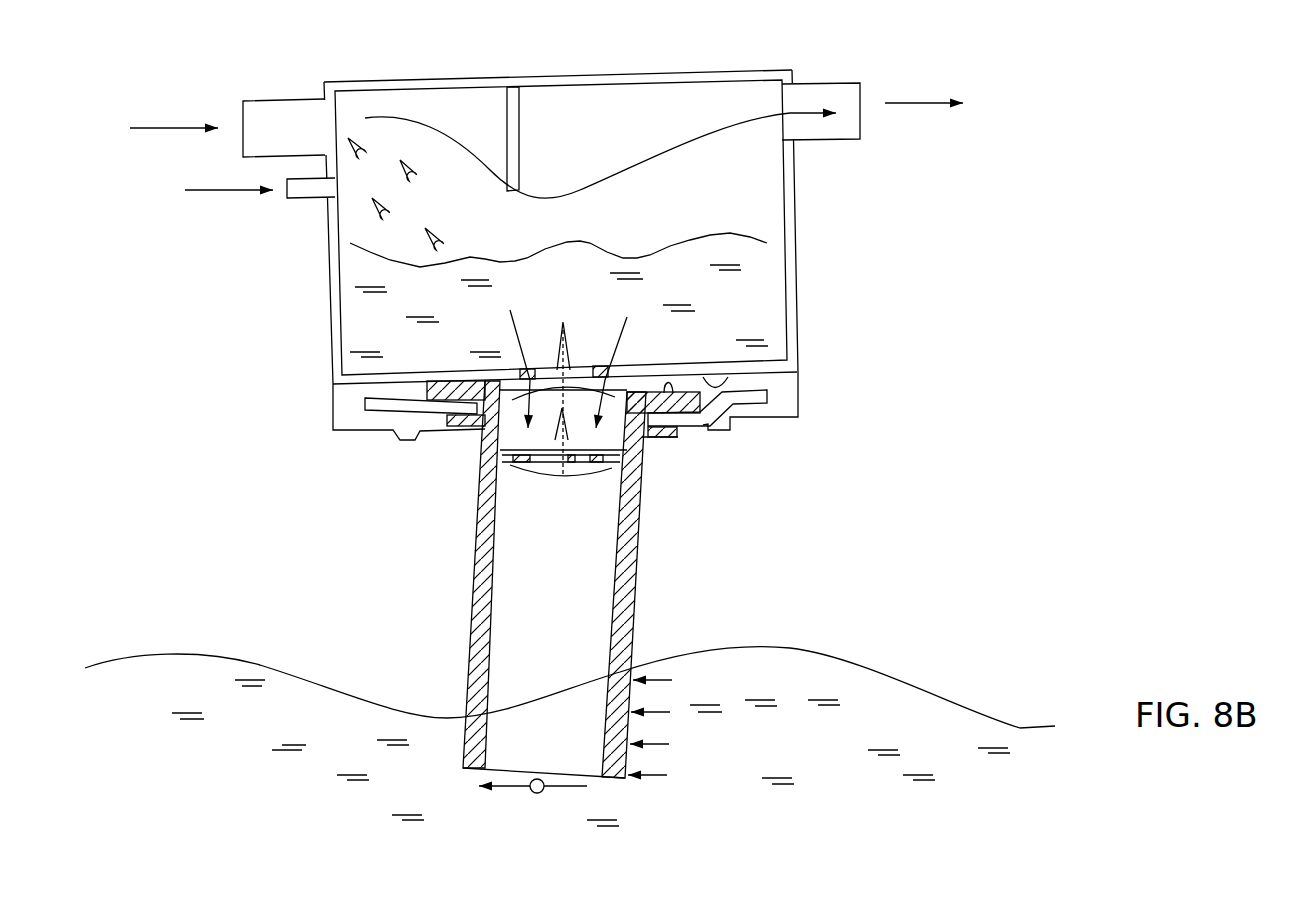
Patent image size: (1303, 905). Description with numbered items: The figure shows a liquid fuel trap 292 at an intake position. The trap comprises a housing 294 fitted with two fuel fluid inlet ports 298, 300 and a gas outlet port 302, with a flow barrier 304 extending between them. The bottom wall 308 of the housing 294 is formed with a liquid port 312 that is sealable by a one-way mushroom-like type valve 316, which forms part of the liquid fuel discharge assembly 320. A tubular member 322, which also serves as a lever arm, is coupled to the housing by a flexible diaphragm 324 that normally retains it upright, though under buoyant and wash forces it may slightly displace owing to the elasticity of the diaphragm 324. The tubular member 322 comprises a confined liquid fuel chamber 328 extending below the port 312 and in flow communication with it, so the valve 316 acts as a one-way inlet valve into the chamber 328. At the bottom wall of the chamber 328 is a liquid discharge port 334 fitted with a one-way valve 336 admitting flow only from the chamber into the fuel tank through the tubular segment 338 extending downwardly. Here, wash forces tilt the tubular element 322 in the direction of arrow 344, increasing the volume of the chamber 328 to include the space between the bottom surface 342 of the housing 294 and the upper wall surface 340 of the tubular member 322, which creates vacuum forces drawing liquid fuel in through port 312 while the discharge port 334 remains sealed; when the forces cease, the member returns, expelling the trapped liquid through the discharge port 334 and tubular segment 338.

The liquid fuel trap 292 is at (315, 493).
The housing 294 is at (792, 183).
The fuel fluid inlet port 298 is at (285, 100).
The fuel fluid inlet port 300 is at (305, 198).
The gas outlet port 302 is at (817, 83).
The flow barrier 304 is at (519, 137).
The bottom wall 308 is at (763, 368).
The liquid port 312 is at (620, 447).
The one-way mushroom-like type valve 316 is at (520, 412).
The liquid fuel discharge assembly 320 is at (453, 458).
The tubular member 322 is at (623, 603).
The flexible diaphragm 324 is at (748, 423).
The confined liquid fuel chamber 328 is at (641, 460).
The liquid discharge port 334 is at (593, 460).
The one-way valve 336 is at (533, 465).
The tubular segment 338 is at (523, 660).
The upper wall surface 340 is at (673, 393).
The bottom surface 342 is at (725, 385).
The arrow 344 is at (505, 788).